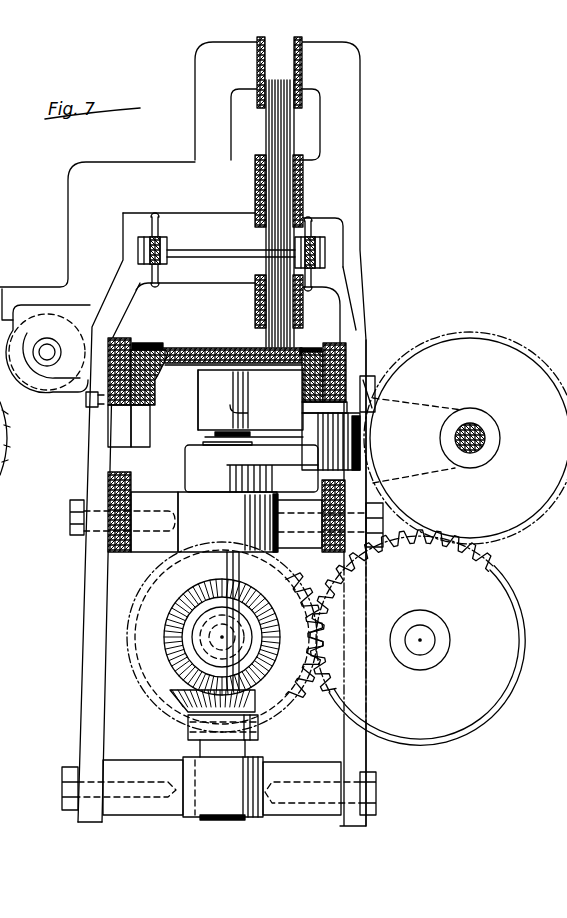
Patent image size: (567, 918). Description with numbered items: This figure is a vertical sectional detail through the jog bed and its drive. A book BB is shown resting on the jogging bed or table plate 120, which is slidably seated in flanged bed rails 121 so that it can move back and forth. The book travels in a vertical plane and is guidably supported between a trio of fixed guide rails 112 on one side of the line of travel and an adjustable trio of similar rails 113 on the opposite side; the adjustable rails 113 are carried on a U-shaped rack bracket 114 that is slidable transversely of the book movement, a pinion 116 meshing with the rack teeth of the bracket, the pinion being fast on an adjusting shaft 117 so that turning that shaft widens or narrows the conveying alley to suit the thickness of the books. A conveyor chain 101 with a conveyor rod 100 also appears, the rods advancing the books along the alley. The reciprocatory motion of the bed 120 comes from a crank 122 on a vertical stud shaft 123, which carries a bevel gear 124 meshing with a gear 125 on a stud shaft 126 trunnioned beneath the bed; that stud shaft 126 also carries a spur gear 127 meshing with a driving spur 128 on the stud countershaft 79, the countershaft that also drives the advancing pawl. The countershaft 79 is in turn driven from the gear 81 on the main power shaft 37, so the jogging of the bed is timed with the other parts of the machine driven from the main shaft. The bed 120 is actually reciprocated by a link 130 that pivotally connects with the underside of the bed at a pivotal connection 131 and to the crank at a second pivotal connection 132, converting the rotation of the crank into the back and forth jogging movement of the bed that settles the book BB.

The main power shaft 37 is at (484, 443).
The stud shaft 79 is at (426, 652).
The gear 81 is at (495, 341).
The conveyor rod 100 is at (203, 249).
The conveyor chain 101 is at (137, 249).
The fixed guide rail 112 is at (303, 72).
The adjustable guide rail 113 is at (257, 66).
The rack bracket 114 is at (42, 291).
The pinion 116 is at (48, 384).
The adjusting shaft 117 is at (63, 332).
The jogging bed 120 is at (223, 340).
The flanged bed rail 121 is at (168, 373).
The crank 122 is at (289, 461).
The vertical stud shaft 123 is at (226, 552).
The bevel gear 124 is at (188, 719).
The gear 125 is at (170, 679).
The stud shaft 126 is at (158, 615).
The spur gear 127 is at (161, 589).
The driving spur 128 is at (498, 575).
The link 130 is at (232, 426).
The pivotal connection 131 is at (196, 421).
The pivotal connection 132 is at (376, 421).
The book BB is at (273, 136).